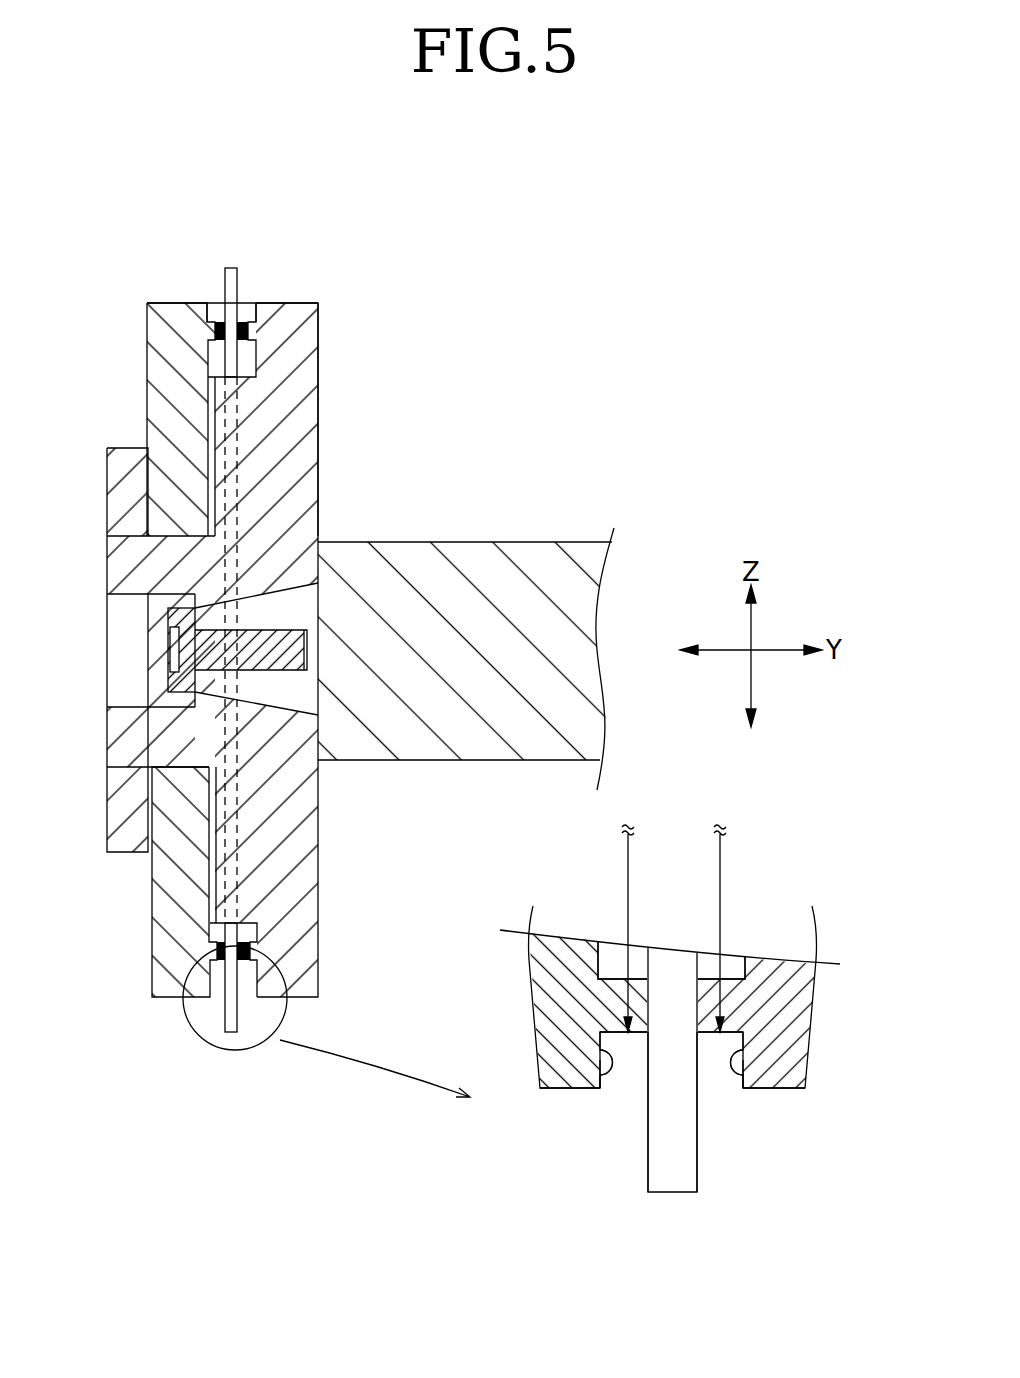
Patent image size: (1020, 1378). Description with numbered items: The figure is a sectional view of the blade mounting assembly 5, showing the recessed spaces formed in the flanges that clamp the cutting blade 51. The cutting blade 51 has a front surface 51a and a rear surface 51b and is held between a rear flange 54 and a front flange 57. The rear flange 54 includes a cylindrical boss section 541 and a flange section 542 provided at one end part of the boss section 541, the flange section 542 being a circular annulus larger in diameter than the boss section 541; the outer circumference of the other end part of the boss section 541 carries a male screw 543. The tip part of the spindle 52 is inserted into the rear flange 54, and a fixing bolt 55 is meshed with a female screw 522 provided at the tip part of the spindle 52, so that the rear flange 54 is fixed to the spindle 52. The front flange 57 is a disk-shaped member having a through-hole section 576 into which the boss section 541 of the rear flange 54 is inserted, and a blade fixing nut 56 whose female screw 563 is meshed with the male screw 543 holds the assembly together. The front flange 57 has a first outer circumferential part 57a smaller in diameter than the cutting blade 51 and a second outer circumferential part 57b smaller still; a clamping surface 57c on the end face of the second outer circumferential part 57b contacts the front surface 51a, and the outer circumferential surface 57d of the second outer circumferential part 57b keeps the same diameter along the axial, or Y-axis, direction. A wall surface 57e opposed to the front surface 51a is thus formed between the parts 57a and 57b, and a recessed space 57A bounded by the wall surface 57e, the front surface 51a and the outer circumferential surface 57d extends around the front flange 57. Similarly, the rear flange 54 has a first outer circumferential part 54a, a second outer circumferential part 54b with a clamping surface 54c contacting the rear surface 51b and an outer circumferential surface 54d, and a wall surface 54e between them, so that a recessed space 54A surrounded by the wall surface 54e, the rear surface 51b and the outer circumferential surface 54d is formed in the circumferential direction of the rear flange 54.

The holding unit 5 is at (181, 170).
The cutting blade 51 is at (243, 234).
The front surface 51a is at (647, 1145).
The rear surface 51b is at (698, 1145).
The spindle 52 is at (539, 511).
The female screw 522 is at (312, 650).
The rear flange 54 is at (353, 271).
The boss section 541 is at (122, 733).
The flange section 542 is at (305, 418).
The male screw 543 is at (130, 541).
The recessed space 54A is at (255, 291).
The first outer circumferential part 54a is at (783, 1108).
The second outer circumferential part 54b is at (714, 1185).
The clamping surface 54c is at (693, 993).
The outer circumferential surface 54d is at (721, 1038).
The wall surface 54e is at (745, 1064).
The fixing bolt 55 is at (150, 635).
The blade fixing nut 56 is at (98, 423).
The female screw 563 is at (122, 528).
The front flange 57 is at (131, 266).
The through-hole section 576 is at (178, 768).
The recessed space 57A is at (214, 288).
The first outer circumferential part 57a is at (552, 1104).
The second outer circumferential part 57b is at (618, 1185).
The clamping surface 57c is at (648, 993).
The outer circumferential surface 57d is at (622, 1038).
The wall surface 57e is at (600, 1064).